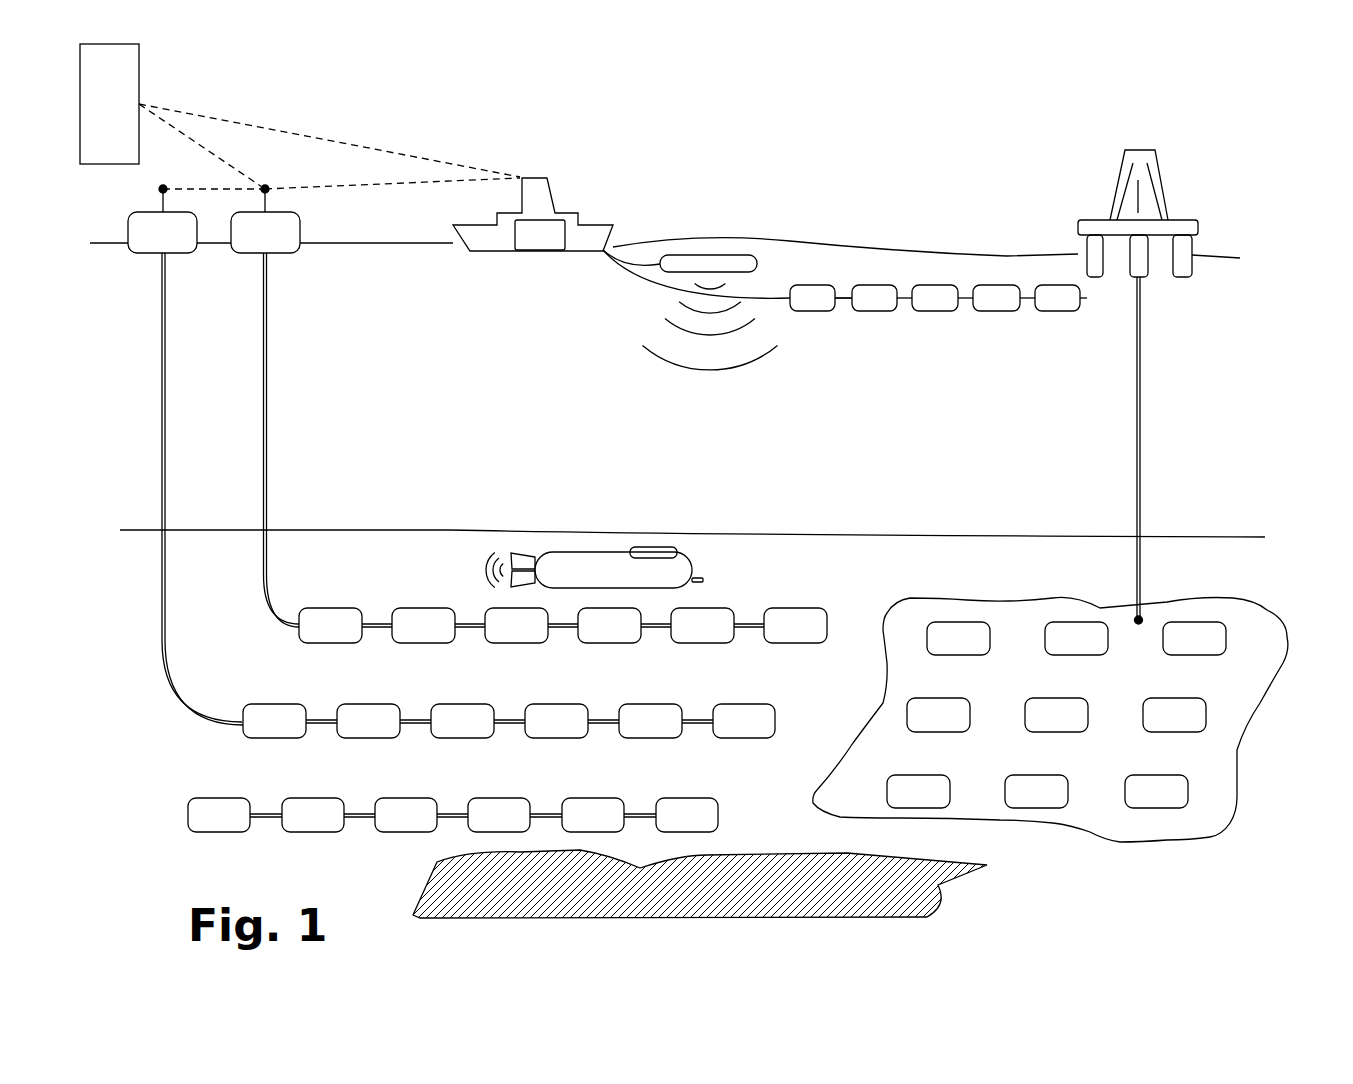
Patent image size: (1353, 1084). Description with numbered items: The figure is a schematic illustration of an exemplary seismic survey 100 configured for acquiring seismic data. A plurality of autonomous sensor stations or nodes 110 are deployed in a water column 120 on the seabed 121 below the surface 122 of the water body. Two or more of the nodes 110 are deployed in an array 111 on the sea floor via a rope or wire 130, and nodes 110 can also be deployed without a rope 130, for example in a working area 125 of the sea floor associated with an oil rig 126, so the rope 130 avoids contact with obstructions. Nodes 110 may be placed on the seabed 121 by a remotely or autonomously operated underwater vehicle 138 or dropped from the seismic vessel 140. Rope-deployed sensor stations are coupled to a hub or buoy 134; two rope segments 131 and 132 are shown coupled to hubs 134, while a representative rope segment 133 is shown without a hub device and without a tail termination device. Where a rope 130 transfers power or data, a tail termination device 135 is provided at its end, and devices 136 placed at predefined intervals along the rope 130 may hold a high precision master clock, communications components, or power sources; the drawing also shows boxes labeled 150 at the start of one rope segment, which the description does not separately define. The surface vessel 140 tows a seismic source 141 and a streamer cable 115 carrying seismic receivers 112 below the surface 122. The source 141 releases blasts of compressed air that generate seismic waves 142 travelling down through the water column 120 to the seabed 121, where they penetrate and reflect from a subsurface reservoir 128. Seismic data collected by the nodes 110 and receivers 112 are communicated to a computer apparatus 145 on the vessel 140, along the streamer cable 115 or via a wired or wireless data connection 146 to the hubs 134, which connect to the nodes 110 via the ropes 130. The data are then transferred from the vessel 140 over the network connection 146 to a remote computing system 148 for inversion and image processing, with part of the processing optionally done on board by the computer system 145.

The seismic survey 100 is at (1242, 103).
The autonomous sensor station or node 110 is at (707, 720).
The array 111 is at (455, 545).
The seismic receiver 112 is at (1006, 597).
The streamer cable 115 is at (905, 303).
The water column 120 is at (408, 346).
The seabed 121 is at (253, 659).
The surface 122 is at (910, 240).
The working area 125 is at (1253, 692).
The oil rig 126 is at (1190, 195).
The subsurface reservoir 128 is at (773, 860).
The rope 130 is at (380, 624).
The rope segment 131 is at (758, 606).
The rope segment 132 is at (702, 700).
The rope segment 133 is at (647, 794).
The hub 134 is at (214, 219).
The tail termination device 135 is at (770, 673).
The device 136 is at (481, 720).
The autonomous underwater vehicle 138 is at (690, 552).
The seismic vessel 140 is at (580, 190).
The seismic source 141 is at (742, 255).
The seismic waves 142 is at (635, 375).
The computer apparatus 145 is at (540, 235).
The wired or wireless data connection 146 is at (307, 118).
The computing system 148 is at (126, 77).
The node 150 is at (377, 625).